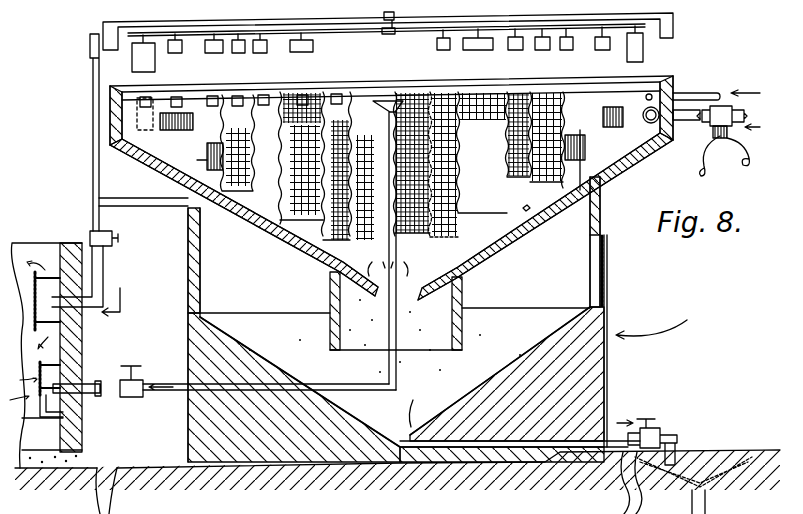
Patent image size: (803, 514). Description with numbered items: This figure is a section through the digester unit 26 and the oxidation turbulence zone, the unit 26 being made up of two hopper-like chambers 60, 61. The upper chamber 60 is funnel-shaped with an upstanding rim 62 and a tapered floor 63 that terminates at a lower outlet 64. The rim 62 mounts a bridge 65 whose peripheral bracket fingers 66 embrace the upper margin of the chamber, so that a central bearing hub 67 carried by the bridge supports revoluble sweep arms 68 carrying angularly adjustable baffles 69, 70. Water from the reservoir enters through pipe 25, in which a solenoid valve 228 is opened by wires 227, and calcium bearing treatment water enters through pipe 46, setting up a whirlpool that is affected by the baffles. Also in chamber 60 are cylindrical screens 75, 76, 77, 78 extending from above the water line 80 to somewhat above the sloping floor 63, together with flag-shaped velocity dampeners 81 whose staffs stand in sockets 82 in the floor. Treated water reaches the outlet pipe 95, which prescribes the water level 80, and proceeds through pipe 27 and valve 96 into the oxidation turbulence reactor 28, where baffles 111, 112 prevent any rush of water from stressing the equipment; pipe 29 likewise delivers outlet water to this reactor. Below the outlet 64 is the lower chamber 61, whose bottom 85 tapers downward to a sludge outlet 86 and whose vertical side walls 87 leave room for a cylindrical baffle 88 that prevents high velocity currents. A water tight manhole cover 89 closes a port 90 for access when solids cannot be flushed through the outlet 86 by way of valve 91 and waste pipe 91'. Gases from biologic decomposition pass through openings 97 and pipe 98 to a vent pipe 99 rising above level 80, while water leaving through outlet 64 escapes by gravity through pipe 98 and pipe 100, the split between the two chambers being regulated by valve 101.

The pipe 25 is at (690, 122).
The unit 26 is at (651, 324).
The pipe 27 is at (180, 383).
The oxidation turbulence reactor 28 is at (28, 445).
The pipe 29 is at (85, 300).
The pipe 46 is at (705, 97).
The upper chamber 60 is at (655, 152).
The lower chamber 61 is at (600, 218).
The upstanding rim 62 is at (672, 85).
The tapered floor 63 is at (525, 209).
The lower outlet 64 is at (384, 275).
The bridge 65 is at (354, 25).
The peripheral bracket fingers 66 is at (107, 43).
The central bearing hub 67 is at (398, 23).
The sweep arms 68 is at (187, 35).
The baffle 69 is at (150, 100).
The baffle 70 is at (328, 44).
The cylindrical screen 75 is at (348, 112).
The cylindrical screen 76 is at (330, 198).
The cylindrical screen 77 is at (280, 186).
The cylindrical screen 78 is at (228, 123).
The water line 80 is at (615, 88).
The velocity dampener 81 is at (180, 125).
The socket 82 is at (205, 156).
The bottom 85 is at (527, 354).
The sludge outlet 86 is at (394, 447).
The side walls 87 is at (198, 288).
The cylindrical baffle 88 is at (458, 300).
The manhole cover 89 is at (606, 273).
The port 90 is at (590, 290).
The valve 91 is at (546, 432).
The waste pipe 91' is at (693, 466).
The outlet pipe 95 is at (393, 123).
The valve 96 is at (128, 397).
The openings 97 is at (330, 277).
The pipe 98 is at (145, 202).
The vent pipe 99 is at (93, 128).
The pipe 100 is at (101, 275).
The valve 101 is at (108, 238).
The baffle 111 is at (33, 295).
The baffle 112 is at (37, 383).
The wires 227 is at (743, 143).
The solenoid valve 228 is at (721, 116).